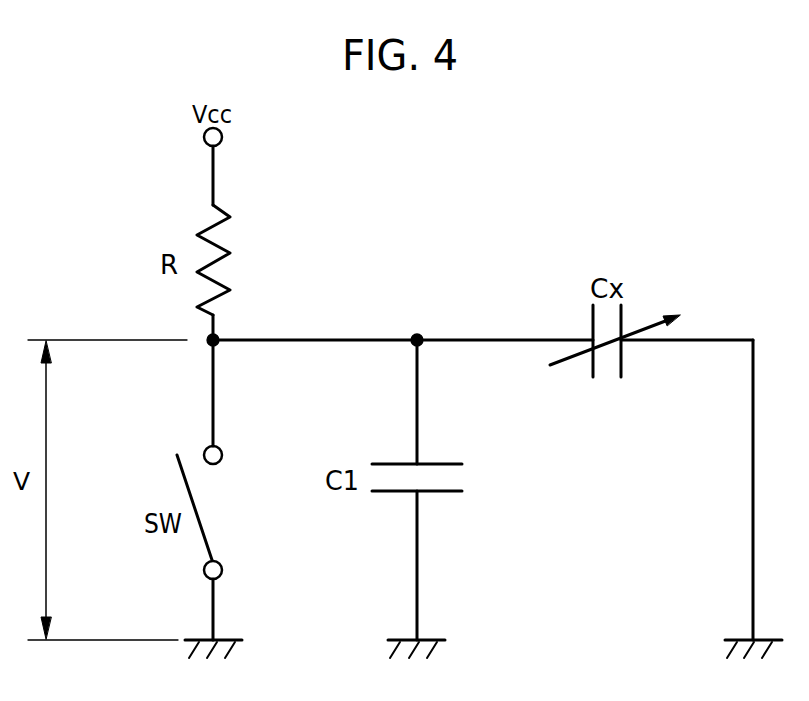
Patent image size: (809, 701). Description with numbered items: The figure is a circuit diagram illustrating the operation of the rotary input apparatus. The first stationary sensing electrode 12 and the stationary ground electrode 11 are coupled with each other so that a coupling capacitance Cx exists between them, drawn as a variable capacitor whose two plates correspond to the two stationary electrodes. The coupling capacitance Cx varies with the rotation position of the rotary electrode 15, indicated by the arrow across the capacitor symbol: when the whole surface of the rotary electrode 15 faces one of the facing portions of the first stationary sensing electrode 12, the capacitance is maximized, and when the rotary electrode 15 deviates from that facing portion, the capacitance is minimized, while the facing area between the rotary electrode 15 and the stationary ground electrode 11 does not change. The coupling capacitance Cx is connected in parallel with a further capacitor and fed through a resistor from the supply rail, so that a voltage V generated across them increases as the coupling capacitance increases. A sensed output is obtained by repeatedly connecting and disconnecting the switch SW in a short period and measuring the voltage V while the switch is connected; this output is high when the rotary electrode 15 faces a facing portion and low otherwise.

The stationary ground electrode 11 is at (621, 365).
The first stationary sensing electrode 12 is at (592, 365).
The rotary electrode 15 is at (637, 327).